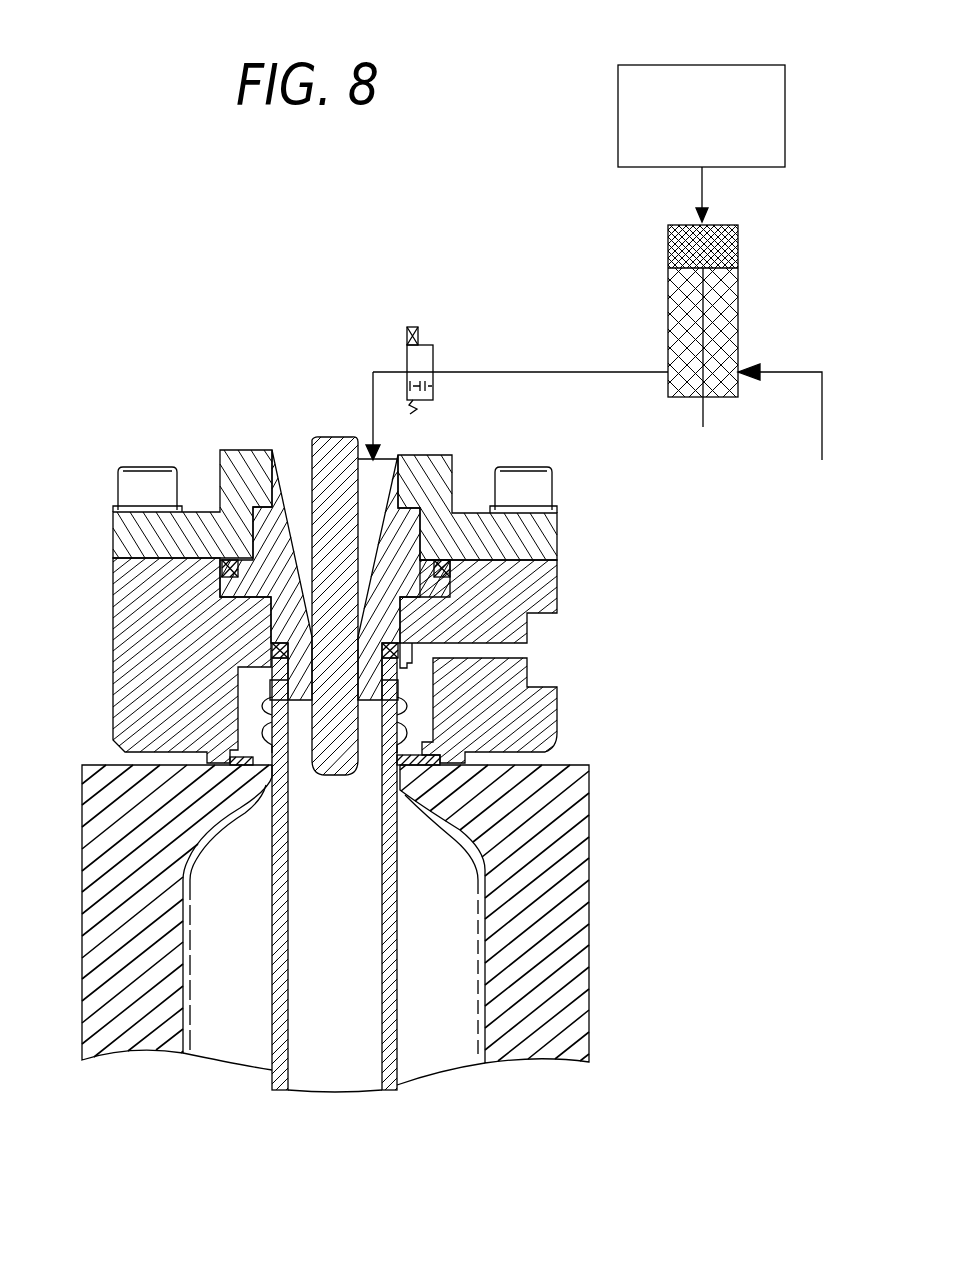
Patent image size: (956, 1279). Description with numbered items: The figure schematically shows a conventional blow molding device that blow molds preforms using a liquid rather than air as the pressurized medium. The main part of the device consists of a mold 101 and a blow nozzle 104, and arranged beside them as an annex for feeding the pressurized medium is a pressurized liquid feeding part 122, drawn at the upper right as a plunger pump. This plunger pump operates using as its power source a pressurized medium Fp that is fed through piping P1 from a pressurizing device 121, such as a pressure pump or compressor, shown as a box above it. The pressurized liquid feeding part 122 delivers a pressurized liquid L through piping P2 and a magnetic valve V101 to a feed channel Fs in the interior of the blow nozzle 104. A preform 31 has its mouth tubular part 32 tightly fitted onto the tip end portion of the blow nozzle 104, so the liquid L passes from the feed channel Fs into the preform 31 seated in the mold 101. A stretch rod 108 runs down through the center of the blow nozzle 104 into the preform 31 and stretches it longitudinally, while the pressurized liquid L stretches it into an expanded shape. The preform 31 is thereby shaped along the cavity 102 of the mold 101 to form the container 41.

The pressurizing device 121 is at (710, 63).
The pressurized liquid feeding part 122 is at (676, 253).
The magnetic valve V101 is at (402, 340).
The blow nozzle 104 is at (268, 565).
The stretch rod 108 is at (313, 470).
The mouth tubular part 32 is at (267, 690).
The preform 31 is at (398, 922).
The mold 101 is at (560, 955).
The container 41 is at (195, 985).
The cavity 102 is at (483, 950).
The piping P1 is at (705, 192).
The piping P2 is at (507, 372).
The pressurized medium Fp is at (720, 248).
The feed channel Fs is at (375, 522).
The pressurized liquid L is at (718, 333).